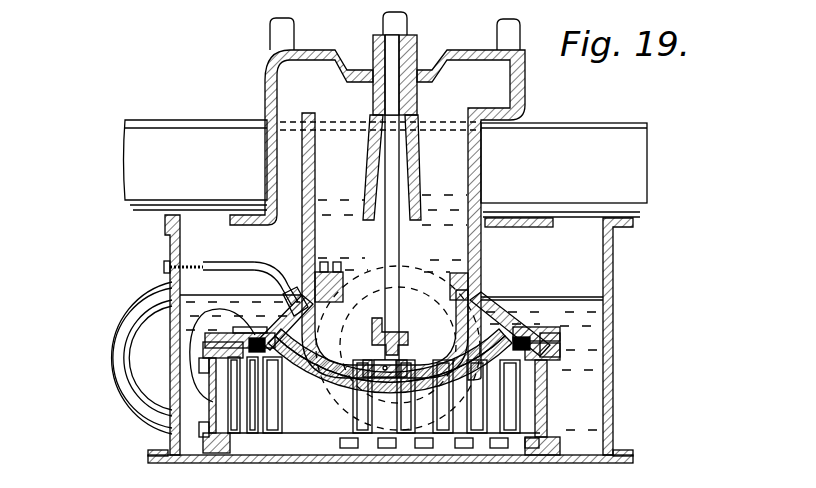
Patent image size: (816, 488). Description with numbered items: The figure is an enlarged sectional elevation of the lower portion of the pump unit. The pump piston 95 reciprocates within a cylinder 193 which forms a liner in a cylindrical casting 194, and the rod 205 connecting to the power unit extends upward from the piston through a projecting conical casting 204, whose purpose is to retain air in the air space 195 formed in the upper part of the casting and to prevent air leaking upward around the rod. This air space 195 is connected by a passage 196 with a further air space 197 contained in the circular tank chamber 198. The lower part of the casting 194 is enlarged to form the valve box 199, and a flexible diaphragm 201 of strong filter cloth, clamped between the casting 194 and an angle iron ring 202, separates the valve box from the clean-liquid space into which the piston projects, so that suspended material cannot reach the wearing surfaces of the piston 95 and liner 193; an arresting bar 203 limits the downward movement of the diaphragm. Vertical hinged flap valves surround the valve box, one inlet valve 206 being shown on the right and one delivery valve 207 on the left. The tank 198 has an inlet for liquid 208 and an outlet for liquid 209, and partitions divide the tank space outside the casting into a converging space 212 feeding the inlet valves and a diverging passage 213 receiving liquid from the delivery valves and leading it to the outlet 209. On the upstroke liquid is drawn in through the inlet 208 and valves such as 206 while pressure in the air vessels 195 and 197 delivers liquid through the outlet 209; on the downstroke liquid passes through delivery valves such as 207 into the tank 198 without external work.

The pump piston 95 is at (488, 345).
The cylinder 193 is at (316, 240).
The cylindrical casting 194 is at (302, 243).
The air space 195 is at (377, 199).
The passage 196 is at (268, 163).
The air space 197 is at (236, 274).
The tank chamber 198 is at (607, 257).
The valve box 199 is at (356, 405).
The flexible diaphragm 201 is at (490, 343).
The angle iron ring 202 is at (540, 347).
The arresting bar 203 is at (346, 392).
The conical casting 204 is at (413, 178).
The rod 205 is at (467, 245).
The inlet valve 206 is at (548, 400).
The delivery valve 207 is at (200, 413).
The inlet for liquid 208 is at (483, 283).
The outlet for liquid 209 is at (150, 353).
The space 212 is at (595, 410).
The space 213 is at (180, 387).